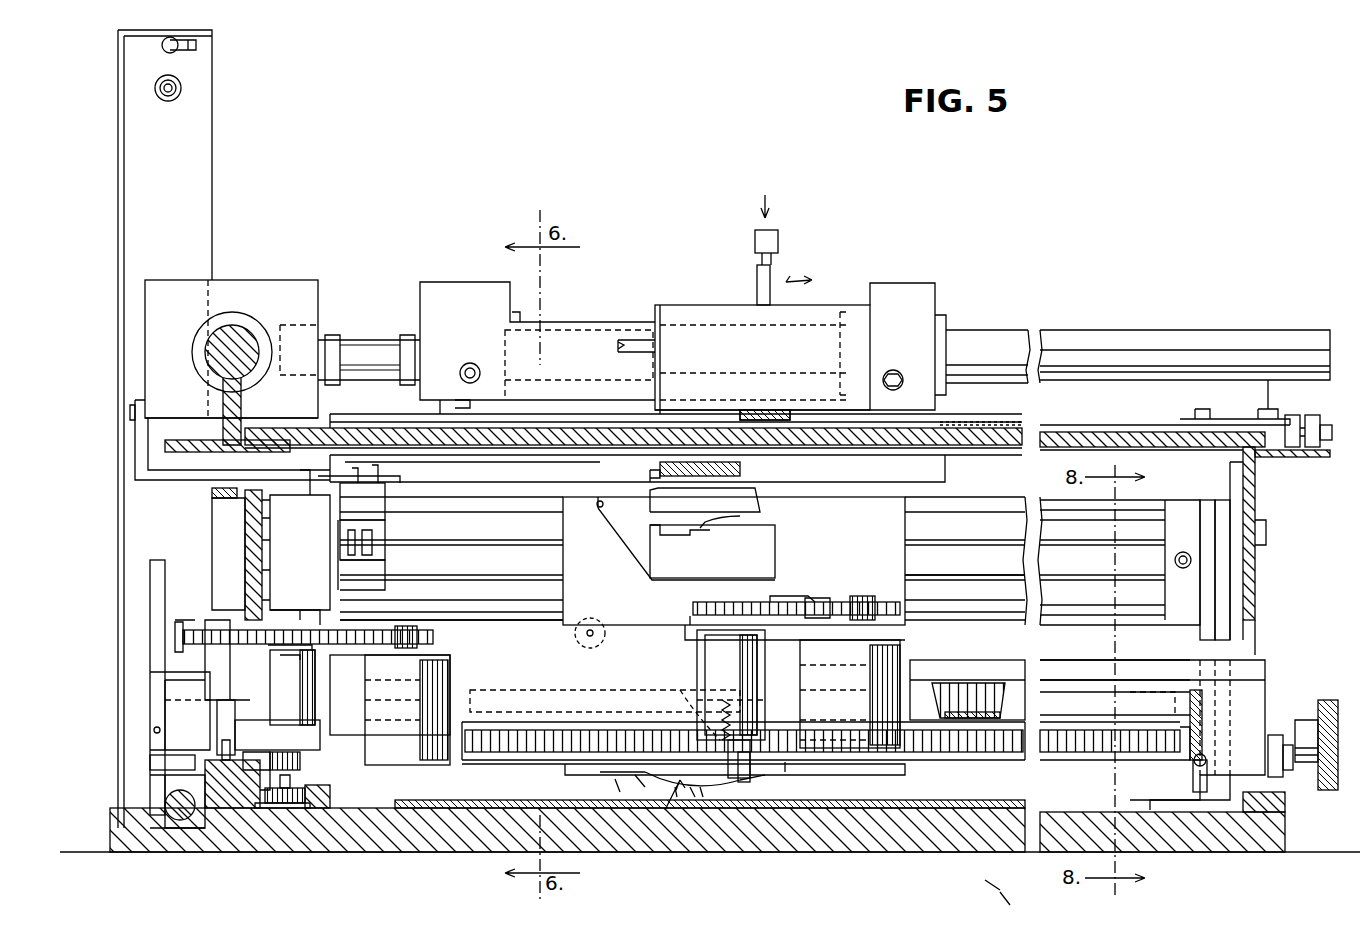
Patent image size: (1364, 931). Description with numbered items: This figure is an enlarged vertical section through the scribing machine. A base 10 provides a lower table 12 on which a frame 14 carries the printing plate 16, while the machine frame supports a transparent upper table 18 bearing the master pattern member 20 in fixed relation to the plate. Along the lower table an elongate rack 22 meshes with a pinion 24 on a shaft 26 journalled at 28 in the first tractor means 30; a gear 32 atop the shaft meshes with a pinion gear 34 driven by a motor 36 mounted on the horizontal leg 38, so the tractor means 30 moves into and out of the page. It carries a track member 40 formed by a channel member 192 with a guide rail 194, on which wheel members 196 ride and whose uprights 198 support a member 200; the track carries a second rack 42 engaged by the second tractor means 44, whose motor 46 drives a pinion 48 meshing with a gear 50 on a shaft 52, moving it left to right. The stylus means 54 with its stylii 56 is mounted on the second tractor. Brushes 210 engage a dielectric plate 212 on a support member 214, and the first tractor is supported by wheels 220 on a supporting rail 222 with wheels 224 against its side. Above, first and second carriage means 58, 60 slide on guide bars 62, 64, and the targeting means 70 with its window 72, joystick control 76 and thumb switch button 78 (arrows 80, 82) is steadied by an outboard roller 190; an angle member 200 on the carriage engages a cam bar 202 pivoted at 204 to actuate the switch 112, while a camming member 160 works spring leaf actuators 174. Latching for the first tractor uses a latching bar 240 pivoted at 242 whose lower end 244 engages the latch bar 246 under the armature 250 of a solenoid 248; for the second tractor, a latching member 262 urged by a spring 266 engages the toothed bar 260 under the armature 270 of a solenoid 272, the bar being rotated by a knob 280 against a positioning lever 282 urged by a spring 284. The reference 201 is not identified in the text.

The base 10 is at (882, 836).
The upper platform or table 12 is at (1093, 812).
The frame 14 is at (495, 775).
The printing plate 16 is at (935, 800).
The upper table 18 is at (1083, 432).
The master pattern member 20 is at (998, 422).
The elongate rack 22 is at (330, 790).
The pinion 24 is at (285, 808).
The shaft 26 is at (300, 768).
The journal 28 is at (315, 692).
The tractor means 30 is at (435, 647).
The gear 32 is at (245, 645).
The pinion gear 34 is at (412, 626).
The motor 36 is at (452, 698).
The horizontal leg 38 is at (390, 710).
The track member 40 is at (945, 648).
The second rack 42 is at (985, 683).
The second tractor means 44 is at (931, 518).
The motor 46 is at (880, 672).
The pinion 48 is at (862, 596).
The gear 50 is at (775, 602).
The shaft 52 is at (822, 598).
The stylus means 54 is at (665, 815).
The stylii 56 is at (615, 780).
The first carriage means 58 is at (310, 265).
The second carriage means 60 is at (947, 299).
The elongate guide bar 62 is at (238, 336).
The elongate guide bar 64 is at (370, 337).
The targeting means 70 is at (827, 294).
The window 72 is at (950, 420).
The joystick control 76 is at (757, 290).
The thumb switch button 78 is at (778, 240).
The arrow 80 is at (752, 199).
The arrow 82 is at (803, 261).
The switch 112 is at (726, 556).
The rotatable camming member 160 is at (378, 492).
The spring leaf actuators 174 is at (380, 550).
The outboard roller or support means 190 is at (1312, 418).
The elongate channel member 192 is at (1060, 685).
The guide rail 194 is at (1100, 660).
The wheel members 196 is at (915, 604).
The uprights 198 is at (1210, 518).
The elongate angle member 200 is at (655, 476).
The block 201 is at (1180, 512).
The cam bar 202 is at (755, 510).
The pivot 204 is at (600, 520).
The brushes 210 is at (280, 510).
The plate of dielectric material 212 is at (220, 520).
The support member 214 is at (212, 494).
The wheels 220 is at (1275, 735).
The supporting rail 222 is at (165, 782).
The wheels 224 is at (270, 752).
The vertical latching bar 240 is at (150, 588).
The pivot 242 is at (148, 730).
The lower end 244 is at (150, 810).
The latch bar 246 is at (180, 820).
The solenoid 248 is at (185, 622).
The armature 250 is at (158, 672).
The toothed bar 260 is at (990, 752).
The latching member 262 is at (752, 778).
The spring 266 is at (712, 738).
The armature 270 is at (735, 670).
The solenoid 272 is at (700, 632).
The knob 280 is at (1325, 790).
The positioning lever 282 is at (1193, 785).
The spring 284 is at (1190, 710).